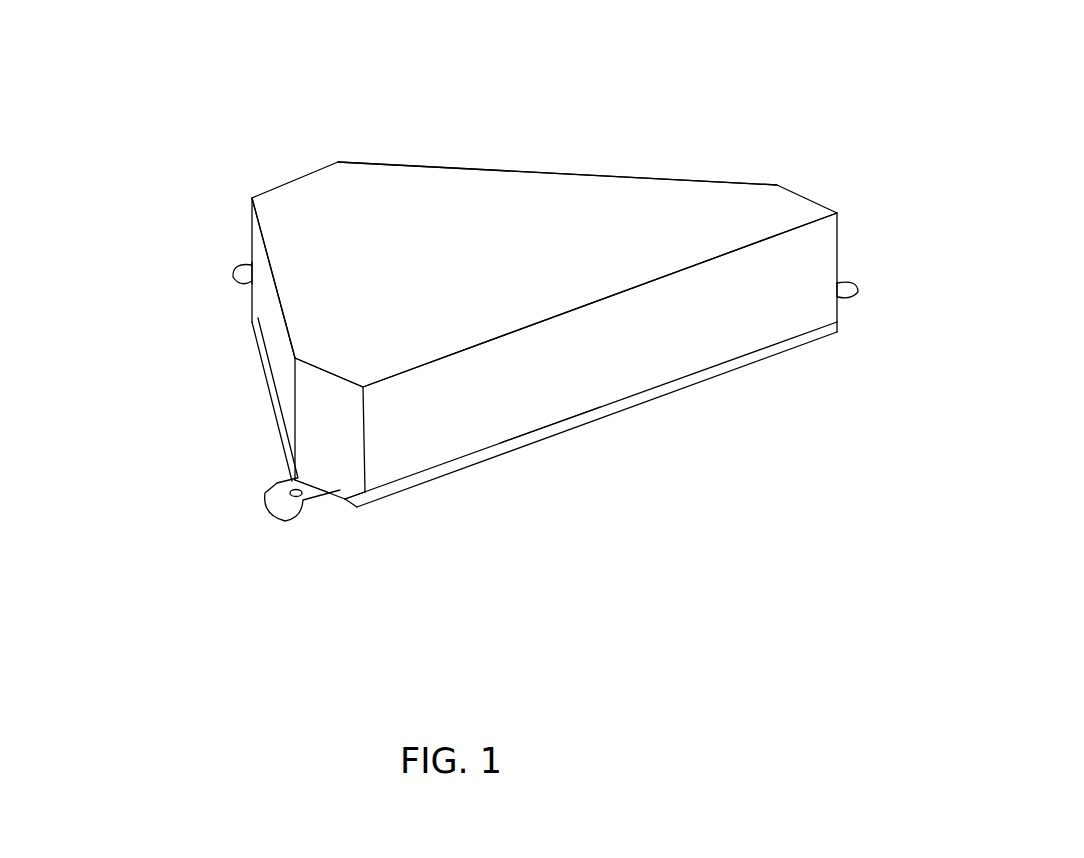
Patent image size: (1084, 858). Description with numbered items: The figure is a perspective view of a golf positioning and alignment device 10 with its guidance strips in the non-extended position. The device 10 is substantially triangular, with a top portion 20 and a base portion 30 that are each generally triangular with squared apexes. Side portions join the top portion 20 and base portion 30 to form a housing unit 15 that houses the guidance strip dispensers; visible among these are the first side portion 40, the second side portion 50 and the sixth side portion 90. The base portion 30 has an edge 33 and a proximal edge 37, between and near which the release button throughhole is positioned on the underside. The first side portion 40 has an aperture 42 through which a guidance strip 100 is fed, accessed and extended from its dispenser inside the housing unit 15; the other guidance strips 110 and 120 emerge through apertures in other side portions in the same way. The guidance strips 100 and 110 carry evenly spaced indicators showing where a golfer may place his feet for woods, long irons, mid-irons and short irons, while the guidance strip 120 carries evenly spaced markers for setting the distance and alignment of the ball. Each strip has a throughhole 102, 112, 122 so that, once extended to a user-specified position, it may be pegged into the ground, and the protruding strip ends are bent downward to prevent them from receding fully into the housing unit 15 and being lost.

The golf positioning and alignment device 10 is at (670, 126).
The housing unit 15 is at (478, 214).
The top portion 20 is at (442, 306).
The base portion 30 is at (663, 390).
The edge 33 is at (358, 511).
The edge 37 is at (558, 440).
The first side portion 40 is at (346, 463).
The aperture 42 is at (327, 475).
The second side portion 50 is at (747, 313).
The sixth side portion 90 is at (275, 328).
The guidance strip 100 is at (322, 490).
The throughhole 102 is at (288, 494).
The guidance strip 110 is at (850, 292).
The throughhole 112 is at (842, 298).
The guidance strip 120 is at (242, 261).
The throughhole 122 is at (246, 262).